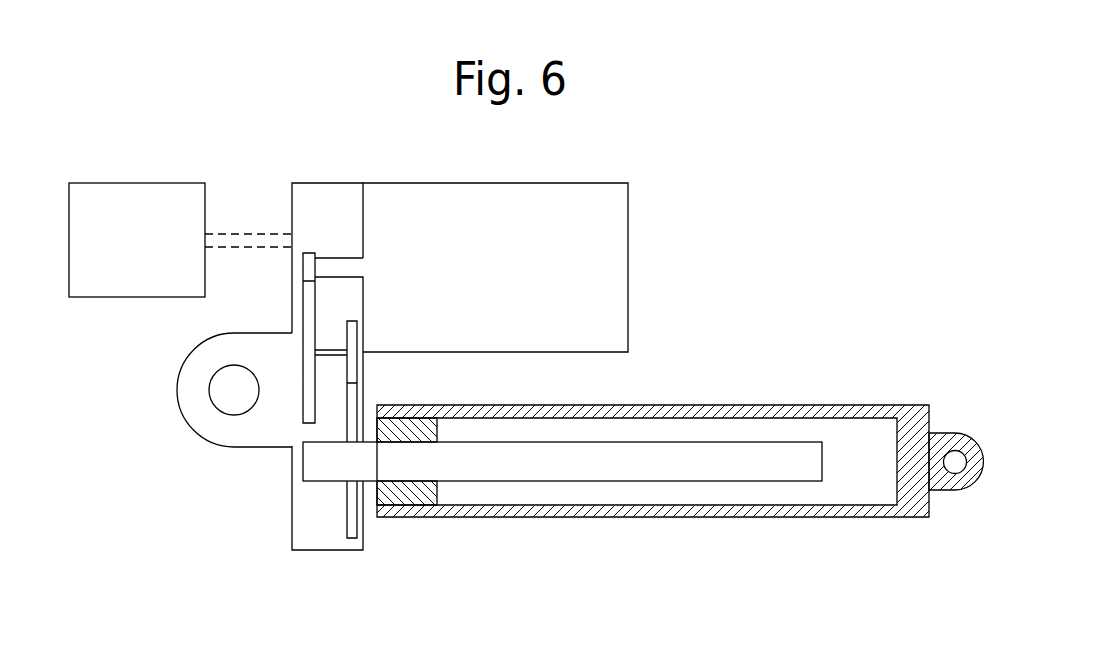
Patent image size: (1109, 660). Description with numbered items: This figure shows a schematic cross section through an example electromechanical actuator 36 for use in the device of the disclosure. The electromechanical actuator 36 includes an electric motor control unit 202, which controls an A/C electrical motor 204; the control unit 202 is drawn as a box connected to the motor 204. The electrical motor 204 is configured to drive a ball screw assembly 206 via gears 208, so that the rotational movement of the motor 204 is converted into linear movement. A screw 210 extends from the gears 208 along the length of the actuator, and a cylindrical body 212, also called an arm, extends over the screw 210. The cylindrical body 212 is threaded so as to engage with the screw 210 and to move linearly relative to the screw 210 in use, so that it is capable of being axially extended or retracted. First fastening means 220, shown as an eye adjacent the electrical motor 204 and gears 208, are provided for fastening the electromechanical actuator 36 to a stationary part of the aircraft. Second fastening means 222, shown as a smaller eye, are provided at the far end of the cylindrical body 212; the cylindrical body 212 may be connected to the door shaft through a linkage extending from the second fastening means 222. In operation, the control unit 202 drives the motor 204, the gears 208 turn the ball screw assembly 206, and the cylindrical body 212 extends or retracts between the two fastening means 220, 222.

The electromechanical actuator 36 is at (768, 260).
The electric motor control unit 202 is at (138, 228).
The A/C electrical motor 204 is at (523, 186).
The ball screw assembly 206 is at (408, 494).
The gears 208 is at (347, 361).
The screw 210 is at (710, 473).
The cylindrical body 212 is at (770, 405).
The first fastening means 220 is at (200, 425).
The second fastening means 222 is at (970, 437).